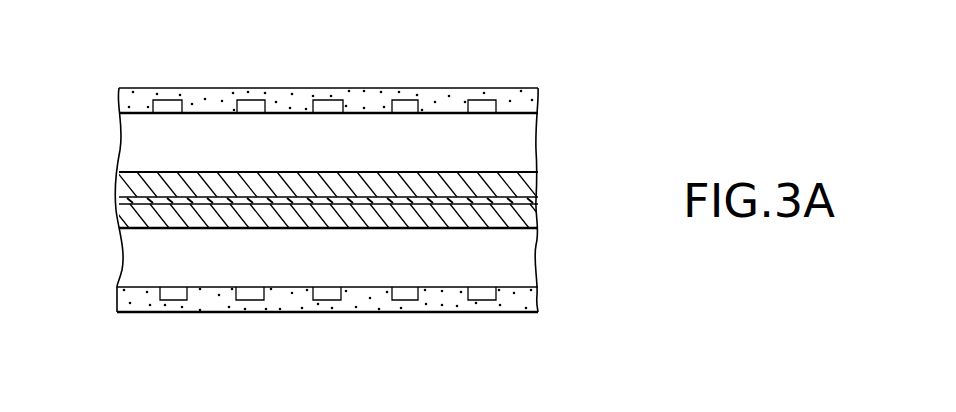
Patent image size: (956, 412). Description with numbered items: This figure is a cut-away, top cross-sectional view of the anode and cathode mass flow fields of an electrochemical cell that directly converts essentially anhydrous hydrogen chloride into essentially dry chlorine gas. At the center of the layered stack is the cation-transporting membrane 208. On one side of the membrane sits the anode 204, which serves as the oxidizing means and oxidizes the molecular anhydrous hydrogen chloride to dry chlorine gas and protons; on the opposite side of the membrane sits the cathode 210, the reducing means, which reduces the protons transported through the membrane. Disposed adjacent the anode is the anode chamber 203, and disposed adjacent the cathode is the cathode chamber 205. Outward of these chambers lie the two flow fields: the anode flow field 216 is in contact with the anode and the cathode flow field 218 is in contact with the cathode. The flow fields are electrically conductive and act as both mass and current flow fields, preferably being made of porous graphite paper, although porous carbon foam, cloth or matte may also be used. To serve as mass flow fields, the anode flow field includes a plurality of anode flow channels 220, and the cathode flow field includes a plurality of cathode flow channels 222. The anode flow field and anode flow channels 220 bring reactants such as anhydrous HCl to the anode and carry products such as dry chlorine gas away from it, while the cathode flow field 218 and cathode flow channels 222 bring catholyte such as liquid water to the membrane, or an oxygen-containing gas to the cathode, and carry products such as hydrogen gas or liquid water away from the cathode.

The anode chamber 203 is at (512, 137).
The anode 204 is at (142, 192).
The cathode chamber 205 is at (512, 260).
The membrane 208 is at (537, 200).
The cathode 210 is at (143, 217).
The anode flow field 216 is at (257, 87).
The cathode flow field 218 is at (255, 313).
The anode flow channels 220 is at (172, 100).
The cathode flow channels 222 is at (172, 313).